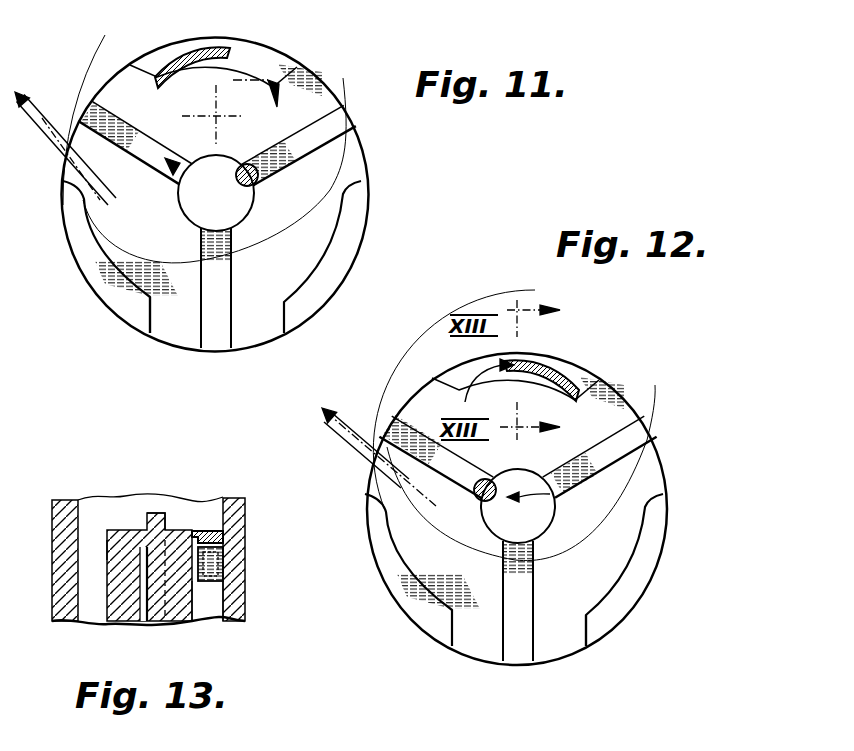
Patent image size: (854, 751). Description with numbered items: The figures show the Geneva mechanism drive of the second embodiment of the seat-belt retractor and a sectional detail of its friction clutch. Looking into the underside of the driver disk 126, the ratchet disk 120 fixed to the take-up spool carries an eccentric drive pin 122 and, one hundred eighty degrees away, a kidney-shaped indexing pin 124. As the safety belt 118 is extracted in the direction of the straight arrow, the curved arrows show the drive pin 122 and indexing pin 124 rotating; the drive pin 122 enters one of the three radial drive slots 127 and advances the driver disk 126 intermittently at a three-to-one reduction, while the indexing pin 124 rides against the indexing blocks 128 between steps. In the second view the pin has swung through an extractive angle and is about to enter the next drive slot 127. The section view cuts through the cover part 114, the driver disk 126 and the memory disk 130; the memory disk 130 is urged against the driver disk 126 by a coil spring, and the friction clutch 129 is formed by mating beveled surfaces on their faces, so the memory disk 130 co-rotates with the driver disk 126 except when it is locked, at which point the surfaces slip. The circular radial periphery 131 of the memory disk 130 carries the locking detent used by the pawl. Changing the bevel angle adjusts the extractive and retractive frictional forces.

In FIG. 13, the cover part 114 is at (62, 600).
In FIG. 11, the safety belt 118 is at (33, 108).
In FIG. 12, the safety belt 118 is at (347, 402).
In FIG. 13, the ratchet disk 120 is at (232, 533).
In FIG. 11, the drive pin 122 is at (256, 183).
In FIG. 12, the drive pin 122 is at (479, 500).
In FIG. 11, the indexing pin 124 is at (185, 50).
In FIG. 12, the indexing pin 124 is at (580, 382).
In FIG. 13, the indexing pin 124 is at (215, 567).
In FIG. 11, the driver disk 126 is at (175, 317).
In FIG. 12, the driver disk 126 is at (575, 650).
In FIG. 13, the driver disk 126 is at (183, 600).
In FIG. 11, the drive slots 127 is at (133, 147).
In FIG. 12, the drive slots 127 is at (622, 440).
In FIG. 11, the indexing blocks 128 is at (268, 60).
In FIG. 12, the indexing blocks 128 is at (570, 368).
In FIG. 13, the indexing blocks 128 is at (215, 530).
In FIG. 13, the friction clutch 129 is at (142, 552).
In FIG. 13, the memory disk 130 is at (107, 547).
In FIG. 13, the circular radial periphery 131 is at (140, 528).